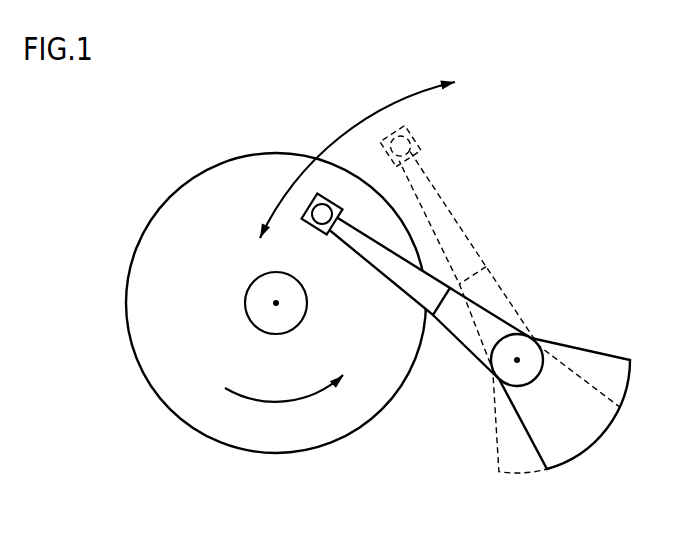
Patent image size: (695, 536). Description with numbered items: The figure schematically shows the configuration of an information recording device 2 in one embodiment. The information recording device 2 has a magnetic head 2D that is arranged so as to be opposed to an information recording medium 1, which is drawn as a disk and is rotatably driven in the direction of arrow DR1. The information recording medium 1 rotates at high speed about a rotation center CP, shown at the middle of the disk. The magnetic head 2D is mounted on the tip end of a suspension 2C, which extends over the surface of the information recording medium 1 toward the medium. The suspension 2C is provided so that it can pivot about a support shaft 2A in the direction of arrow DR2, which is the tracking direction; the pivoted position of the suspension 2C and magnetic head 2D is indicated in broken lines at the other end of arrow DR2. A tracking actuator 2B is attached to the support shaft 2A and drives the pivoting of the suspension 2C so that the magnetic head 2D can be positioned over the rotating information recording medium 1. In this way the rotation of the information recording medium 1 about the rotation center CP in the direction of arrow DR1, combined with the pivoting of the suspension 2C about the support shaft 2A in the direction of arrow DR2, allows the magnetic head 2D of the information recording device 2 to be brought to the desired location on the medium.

The information recording medium 1 is at (173, 419).
The rotation center CP is at (274, 303).
The information recording device 2 is at (482, 315).
The support shaft 2A is at (508, 372).
The tracking actuator 2B is at (575, 436).
The suspension 2C is at (385, 256).
The magnetic head 2D is at (330, 206).
The direction of arrow DR1 is at (276, 403).
The direction of arrow DR2 is at (378, 111).